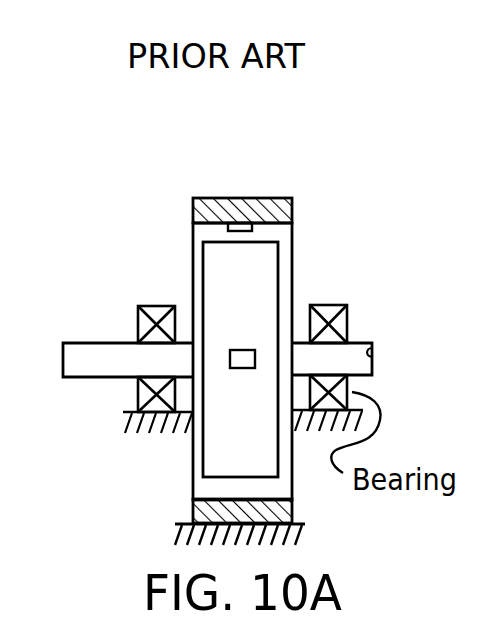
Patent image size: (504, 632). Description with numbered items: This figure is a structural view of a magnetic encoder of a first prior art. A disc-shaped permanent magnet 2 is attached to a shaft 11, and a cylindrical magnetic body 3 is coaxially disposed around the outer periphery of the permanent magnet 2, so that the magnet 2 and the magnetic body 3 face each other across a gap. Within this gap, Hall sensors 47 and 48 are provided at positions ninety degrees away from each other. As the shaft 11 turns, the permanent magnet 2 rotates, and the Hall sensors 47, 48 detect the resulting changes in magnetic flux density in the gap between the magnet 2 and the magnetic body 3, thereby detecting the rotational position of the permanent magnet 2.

The permanent magnet 2 is at (292, 262).
The magnetic body 3 is at (281, 197).
The shaft 11 is at (102, 342).
The Hall sensor 47 is at (238, 223).
The Hall sensor 48 is at (255, 351).